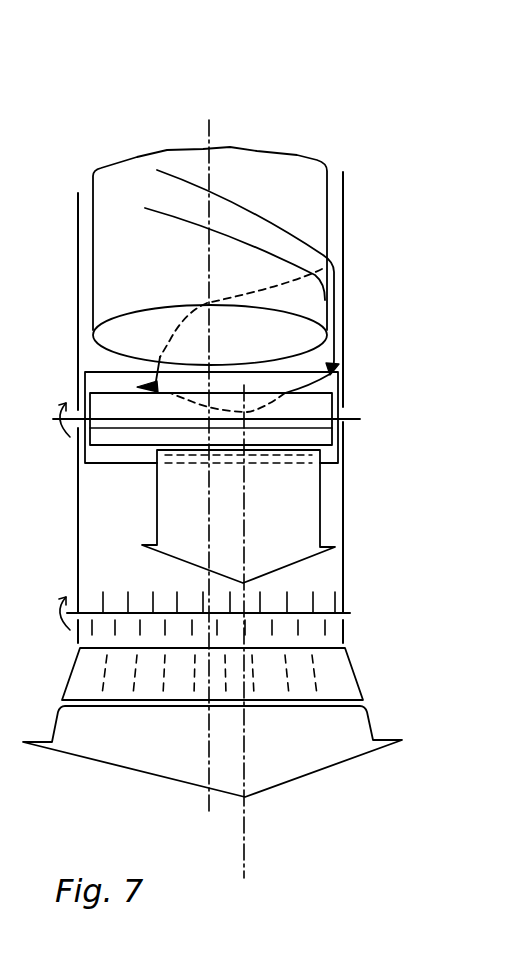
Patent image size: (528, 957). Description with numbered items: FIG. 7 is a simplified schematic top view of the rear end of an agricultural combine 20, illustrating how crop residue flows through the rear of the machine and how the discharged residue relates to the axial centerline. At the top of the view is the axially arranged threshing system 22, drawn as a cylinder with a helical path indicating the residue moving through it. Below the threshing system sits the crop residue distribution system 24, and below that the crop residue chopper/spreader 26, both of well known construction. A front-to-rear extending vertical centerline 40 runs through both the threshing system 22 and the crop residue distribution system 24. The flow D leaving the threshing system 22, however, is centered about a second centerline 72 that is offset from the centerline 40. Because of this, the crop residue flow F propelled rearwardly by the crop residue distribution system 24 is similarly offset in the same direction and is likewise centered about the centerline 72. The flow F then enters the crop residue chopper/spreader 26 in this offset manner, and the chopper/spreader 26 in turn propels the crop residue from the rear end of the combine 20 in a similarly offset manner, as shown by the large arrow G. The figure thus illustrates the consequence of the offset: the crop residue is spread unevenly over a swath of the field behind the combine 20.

The agricultural combine 20 is at (337, 118).
The axially arranged threshing system 22 is at (330, 167).
The flow from threshing system D is at (345, 360).
The crop residue distribution system 24 is at (345, 398).
The crop residue flow F is at (318, 500).
The crop residue chopper/spreader 26 is at (353, 597).
The large arrow G is at (367, 718).
The centerline 40 is at (208, 802).
The centerline 72 is at (245, 852).